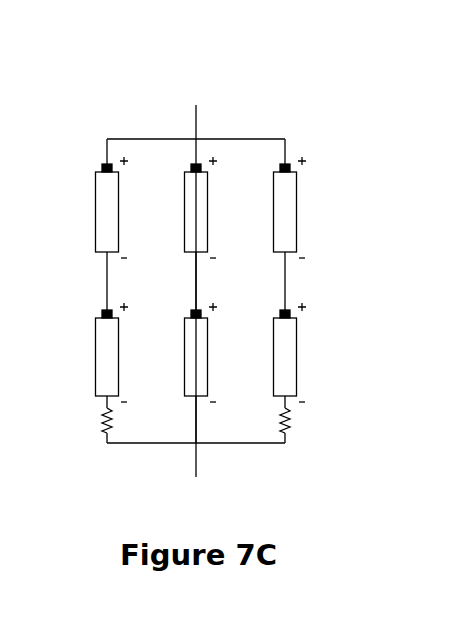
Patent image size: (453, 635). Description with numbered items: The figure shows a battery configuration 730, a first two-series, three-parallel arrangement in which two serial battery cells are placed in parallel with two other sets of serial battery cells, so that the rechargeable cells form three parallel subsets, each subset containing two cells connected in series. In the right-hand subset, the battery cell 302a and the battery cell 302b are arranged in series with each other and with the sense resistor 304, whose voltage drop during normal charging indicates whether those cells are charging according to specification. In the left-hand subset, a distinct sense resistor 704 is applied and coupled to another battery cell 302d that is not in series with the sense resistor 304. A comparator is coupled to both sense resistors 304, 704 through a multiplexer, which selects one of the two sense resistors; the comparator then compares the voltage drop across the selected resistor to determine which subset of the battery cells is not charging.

The battery configuration 730 is at (335, 80).
The battery cell 302a is at (298, 190).
The battery cell 302b is at (298, 350).
The battery cell 302d is at (95, 360).
The sense resistor 304 is at (290, 425).
The sense resistor 704 is at (110, 425).